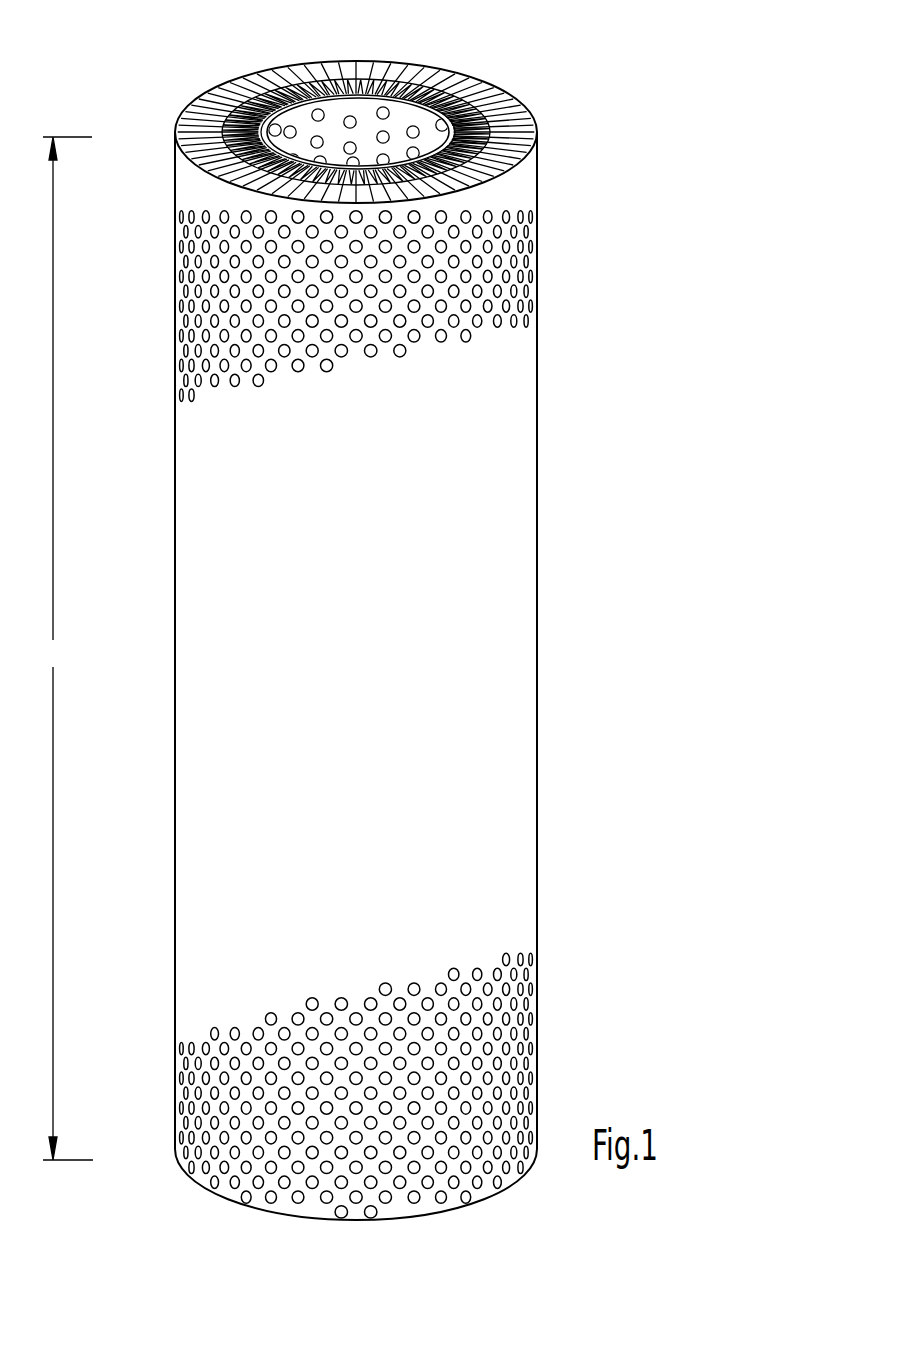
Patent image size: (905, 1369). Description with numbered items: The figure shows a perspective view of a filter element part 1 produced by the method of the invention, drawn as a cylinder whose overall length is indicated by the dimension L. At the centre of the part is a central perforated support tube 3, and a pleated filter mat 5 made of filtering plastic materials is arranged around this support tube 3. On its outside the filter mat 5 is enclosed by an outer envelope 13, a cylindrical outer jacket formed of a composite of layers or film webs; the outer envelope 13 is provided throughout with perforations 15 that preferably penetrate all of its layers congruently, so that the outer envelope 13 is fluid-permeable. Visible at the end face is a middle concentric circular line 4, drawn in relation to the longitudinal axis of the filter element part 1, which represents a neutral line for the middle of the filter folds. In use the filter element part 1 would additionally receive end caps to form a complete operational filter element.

The filter element part 1 is at (573, 167).
The central perforated support tube 3 is at (363, 112).
The middle concentric circular line 4 is at (270, 72).
The pleated filter mat 5 is at (510, 87).
The outer envelope 13 is at (212, 1195).
The perforations 15 is at (177, 380).
The length L is at (68, 648).